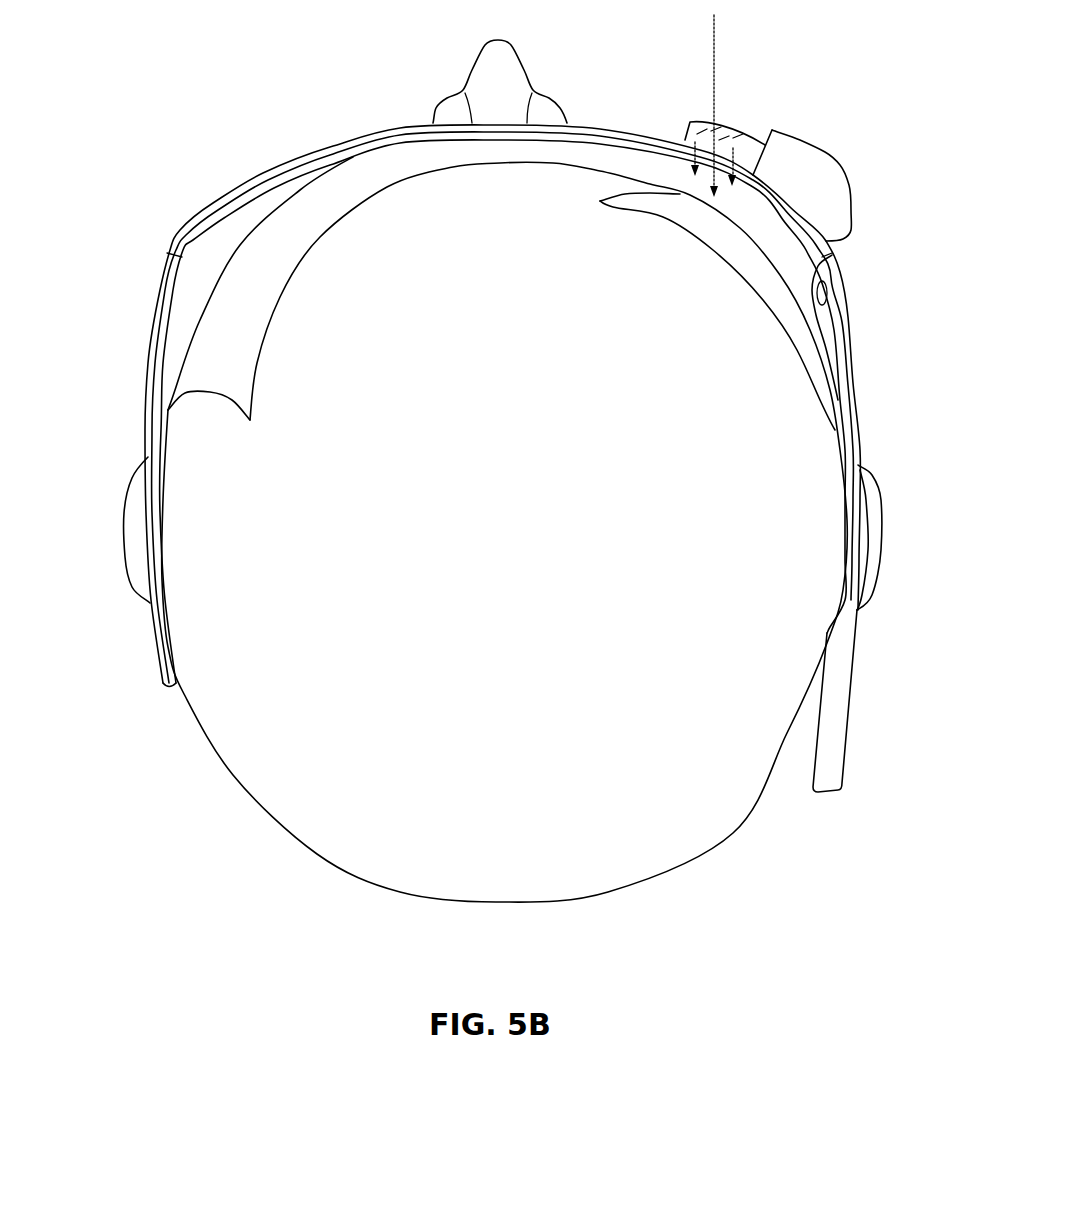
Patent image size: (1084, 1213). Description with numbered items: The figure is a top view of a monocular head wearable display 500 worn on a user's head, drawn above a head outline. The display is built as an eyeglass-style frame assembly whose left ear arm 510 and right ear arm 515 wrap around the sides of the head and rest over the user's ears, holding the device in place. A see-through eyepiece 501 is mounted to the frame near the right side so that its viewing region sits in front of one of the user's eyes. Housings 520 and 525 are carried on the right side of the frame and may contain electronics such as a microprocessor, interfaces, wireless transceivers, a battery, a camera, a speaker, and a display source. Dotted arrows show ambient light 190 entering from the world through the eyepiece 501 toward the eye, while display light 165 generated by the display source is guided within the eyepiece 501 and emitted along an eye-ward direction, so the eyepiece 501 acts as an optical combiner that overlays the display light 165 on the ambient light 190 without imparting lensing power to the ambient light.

The monocular head wearable display 500 is at (230, 99).
The left ear arm 510 is at (158, 340).
The right ear arm 515 is at (848, 402).
The housing 520 is at (826, 193).
The housing 525 is at (842, 705).
The eyepiece 501 is at (740, 128).
The display light 165 is at (690, 145).
The ambient light 190 is at (713, 58).